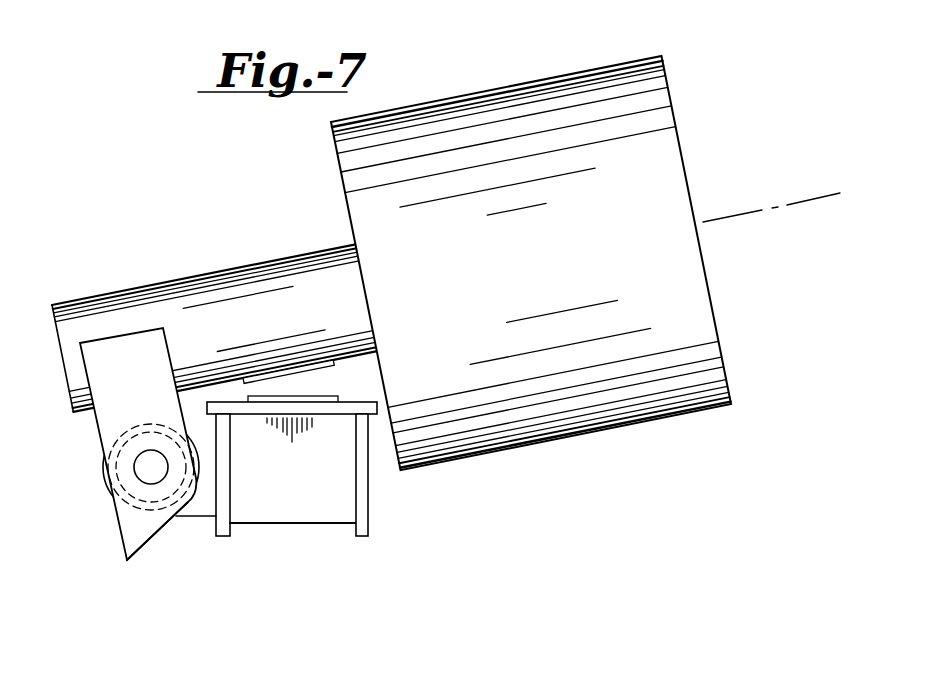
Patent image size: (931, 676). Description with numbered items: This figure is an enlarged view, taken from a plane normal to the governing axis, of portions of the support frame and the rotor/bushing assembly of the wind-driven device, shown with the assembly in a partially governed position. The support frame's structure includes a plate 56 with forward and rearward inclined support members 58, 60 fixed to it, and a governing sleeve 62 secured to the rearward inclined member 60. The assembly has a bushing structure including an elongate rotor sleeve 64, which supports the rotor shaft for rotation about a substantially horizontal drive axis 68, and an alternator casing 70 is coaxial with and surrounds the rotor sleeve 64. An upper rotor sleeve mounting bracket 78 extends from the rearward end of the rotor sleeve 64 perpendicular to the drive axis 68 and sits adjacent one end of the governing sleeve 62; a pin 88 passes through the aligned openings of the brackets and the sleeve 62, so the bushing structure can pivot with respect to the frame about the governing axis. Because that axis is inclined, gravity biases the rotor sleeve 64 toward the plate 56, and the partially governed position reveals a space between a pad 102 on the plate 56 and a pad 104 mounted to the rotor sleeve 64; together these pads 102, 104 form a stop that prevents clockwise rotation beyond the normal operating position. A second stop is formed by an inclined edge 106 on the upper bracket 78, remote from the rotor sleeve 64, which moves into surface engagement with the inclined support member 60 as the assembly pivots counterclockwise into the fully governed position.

The plate 56 is at (342, 417).
The forward inclined support member 58 is at (370, 530).
The rearward inclined support member 60 is at (222, 538).
The governing sleeve 62 is at (108, 483).
The rotor sleeve 64 is at (178, 282).
The drive axis 68 is at (806, 198).
The alternator casing 70 is at (423, 103).
The upper rotor sleeve mounting bracket 78 is at (98, 427).
The pin 88 is at (140, 450).
The pad 102 is at (340, 399).
The pad 104 is at (330, 372).
The inclined edge 106 is at (149, 541).